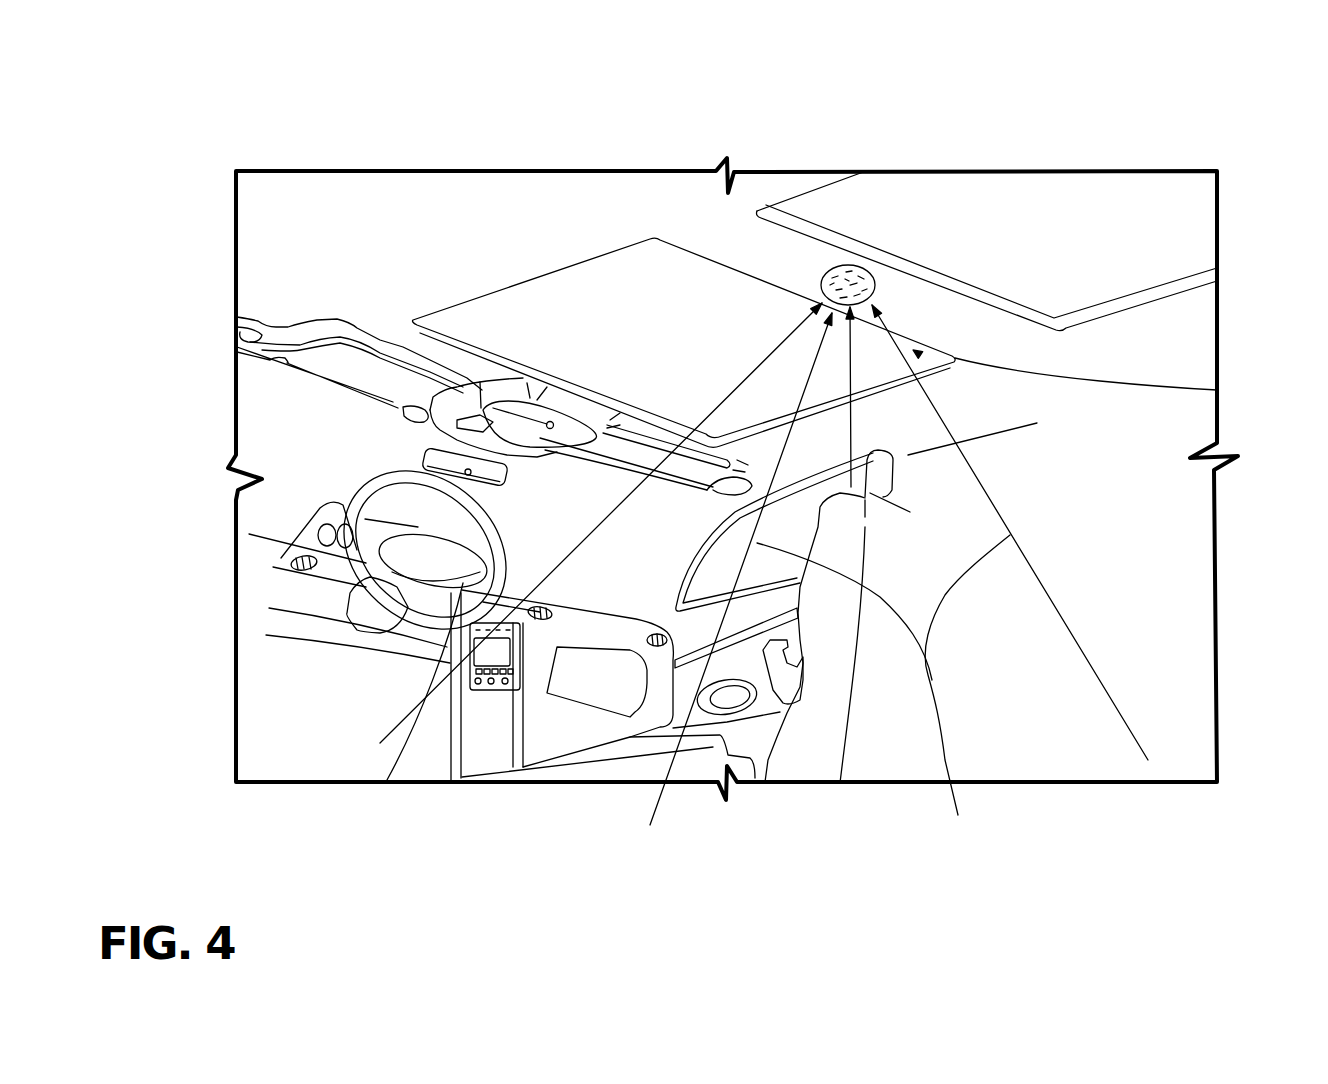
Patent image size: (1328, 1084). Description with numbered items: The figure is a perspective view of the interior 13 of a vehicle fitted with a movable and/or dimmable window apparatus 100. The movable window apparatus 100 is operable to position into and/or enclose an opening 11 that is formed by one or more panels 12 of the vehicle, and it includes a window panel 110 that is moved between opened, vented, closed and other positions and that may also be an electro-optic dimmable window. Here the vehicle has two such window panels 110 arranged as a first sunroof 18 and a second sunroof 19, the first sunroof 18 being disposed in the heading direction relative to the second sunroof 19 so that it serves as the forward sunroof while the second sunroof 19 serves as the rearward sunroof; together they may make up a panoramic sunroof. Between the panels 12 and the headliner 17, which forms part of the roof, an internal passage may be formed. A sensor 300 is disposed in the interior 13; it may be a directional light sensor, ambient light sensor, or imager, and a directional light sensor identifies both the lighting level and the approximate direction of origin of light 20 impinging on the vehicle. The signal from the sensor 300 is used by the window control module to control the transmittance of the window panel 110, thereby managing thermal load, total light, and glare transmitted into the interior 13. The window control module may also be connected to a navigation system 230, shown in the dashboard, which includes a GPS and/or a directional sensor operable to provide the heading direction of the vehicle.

The interior 13 is at (217, 165).
The opening 11 is at (830, 277).
The window panel 110 is at (830, 277).
The first sunroof 18 is at (610, 331).
The second sunroof 19 is at (1026, 255).
The panel 12 is at (807, 136).
The headliner 17 is at (748, 227).
The movable window apparatus 100 is at (1082, 330).
The sensor 300 is at (826, 270).
The navigation system 230 is at (492, 698).
The light 20 is at (883, 645).